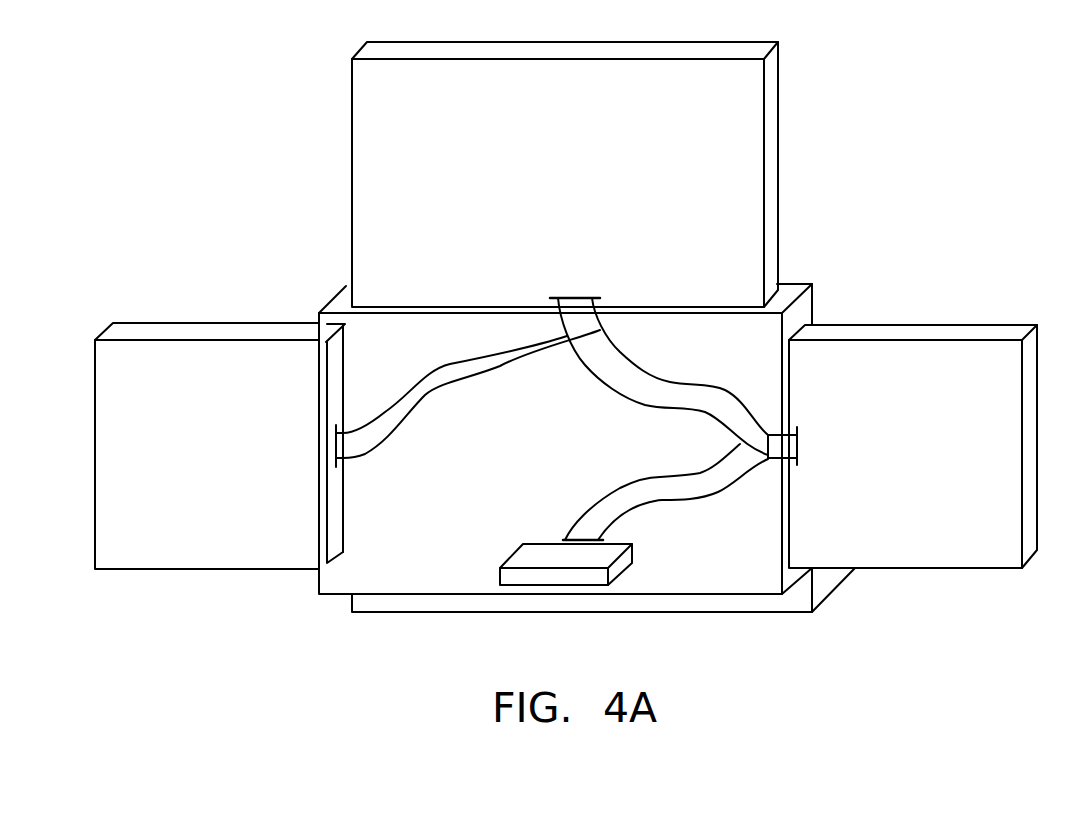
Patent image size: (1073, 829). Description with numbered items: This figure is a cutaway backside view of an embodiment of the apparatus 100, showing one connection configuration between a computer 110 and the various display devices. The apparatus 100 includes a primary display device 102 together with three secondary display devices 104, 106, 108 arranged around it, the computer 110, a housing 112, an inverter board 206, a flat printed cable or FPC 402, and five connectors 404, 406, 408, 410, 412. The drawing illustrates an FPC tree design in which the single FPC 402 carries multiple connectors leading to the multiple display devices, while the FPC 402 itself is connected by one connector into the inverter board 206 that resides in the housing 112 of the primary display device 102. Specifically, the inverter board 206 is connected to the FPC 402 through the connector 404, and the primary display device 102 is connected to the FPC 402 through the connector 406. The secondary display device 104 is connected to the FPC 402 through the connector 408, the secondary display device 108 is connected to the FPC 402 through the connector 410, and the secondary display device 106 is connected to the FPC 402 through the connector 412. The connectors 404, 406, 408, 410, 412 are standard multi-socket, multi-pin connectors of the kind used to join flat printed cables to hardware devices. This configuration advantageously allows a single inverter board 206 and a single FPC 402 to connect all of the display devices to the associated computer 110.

The apparatus 100 is at (240, 181).
The primary display device 102 is at (712, 595).
The secondary display device 104 is at (989, 532).
The secondary display device 106 is at (189, 534).
The secondary display device 108 is at (749, 281).
The computer 110 is at (352, 611).
The housing 112 is at (337, 300).
The inverter board 206 is at (513, 558).
The FPC 402 is at (680, 500).
The connector 404 is at (563, 540).
The connector 406 is at (628, 507).
The connector 408 is at (797, 443).
The connector 410 is at (575, 297).
The connector 412 is at (337, 470).